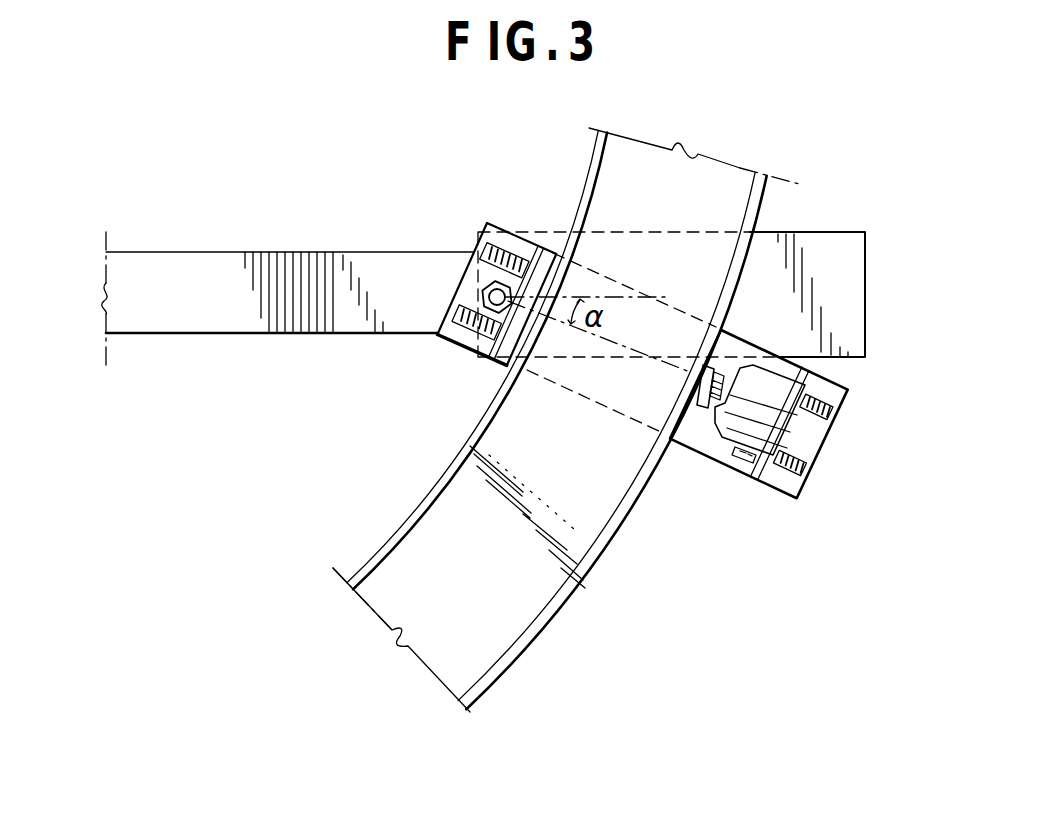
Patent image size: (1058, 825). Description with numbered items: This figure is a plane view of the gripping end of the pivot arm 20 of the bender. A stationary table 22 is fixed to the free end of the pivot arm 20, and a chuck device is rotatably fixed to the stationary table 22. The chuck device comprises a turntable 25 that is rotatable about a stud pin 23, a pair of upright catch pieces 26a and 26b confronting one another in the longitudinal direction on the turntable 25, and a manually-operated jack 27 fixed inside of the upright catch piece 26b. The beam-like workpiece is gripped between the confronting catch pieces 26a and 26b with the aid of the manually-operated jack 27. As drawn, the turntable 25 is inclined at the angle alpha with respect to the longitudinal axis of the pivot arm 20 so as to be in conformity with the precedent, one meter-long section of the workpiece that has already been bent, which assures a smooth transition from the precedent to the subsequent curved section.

The pivot arm 20 is at (220, 268).
The stationary table 22 is at (828, 244).
The stud pin 23 is at (490, 282).
The turntable 25 is at (720, 454).
The upright catch piece 26a is at (552, 262).
The upright catch piece 26b is at (797, 440).
The manually-operated jack 27 is at (723, 442).